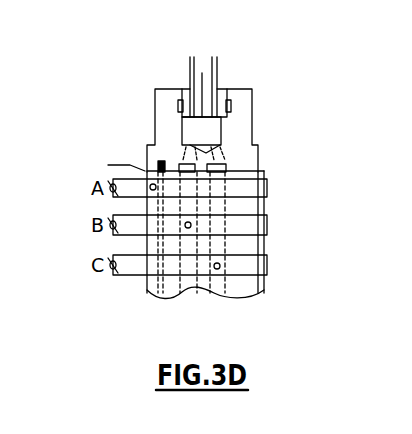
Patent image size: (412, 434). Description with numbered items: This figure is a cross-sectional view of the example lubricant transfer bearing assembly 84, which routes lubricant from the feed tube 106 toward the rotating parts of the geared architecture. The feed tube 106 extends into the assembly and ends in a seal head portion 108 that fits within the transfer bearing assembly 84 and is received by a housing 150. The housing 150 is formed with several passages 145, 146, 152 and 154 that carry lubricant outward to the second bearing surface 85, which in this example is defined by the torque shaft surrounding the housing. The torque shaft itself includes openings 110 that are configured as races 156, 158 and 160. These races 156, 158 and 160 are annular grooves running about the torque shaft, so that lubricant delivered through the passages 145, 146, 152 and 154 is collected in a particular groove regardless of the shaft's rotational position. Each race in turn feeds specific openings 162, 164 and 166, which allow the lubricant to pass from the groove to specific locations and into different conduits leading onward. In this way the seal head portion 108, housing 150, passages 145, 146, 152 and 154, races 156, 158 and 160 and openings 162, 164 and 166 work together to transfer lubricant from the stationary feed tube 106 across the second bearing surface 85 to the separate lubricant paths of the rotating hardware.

The lubricant transfer bearing assembly 84 is at (300, 92).
The second bearing surface 85 is at (243, 170).
The feed tube 106 is at (208, 76).
The seal head portion 108 is at (188, 98).
The openings 110 is at (216, 174).
The passage 145 is at (180, 164).
The passage 146 is at (165, 162).
The housing 150 is at (240, 118).
The passage 152 is at (182, 130).
The passage 154 is at (147, 172).
The race 156 is at (253, 190).
The race 158 is at (252, 228).
The race 160 is at (252, 268).
The opening 162 is at (220, 268).
The opening 164 is at (185, 226).
The opening 166 is at (150, 188).